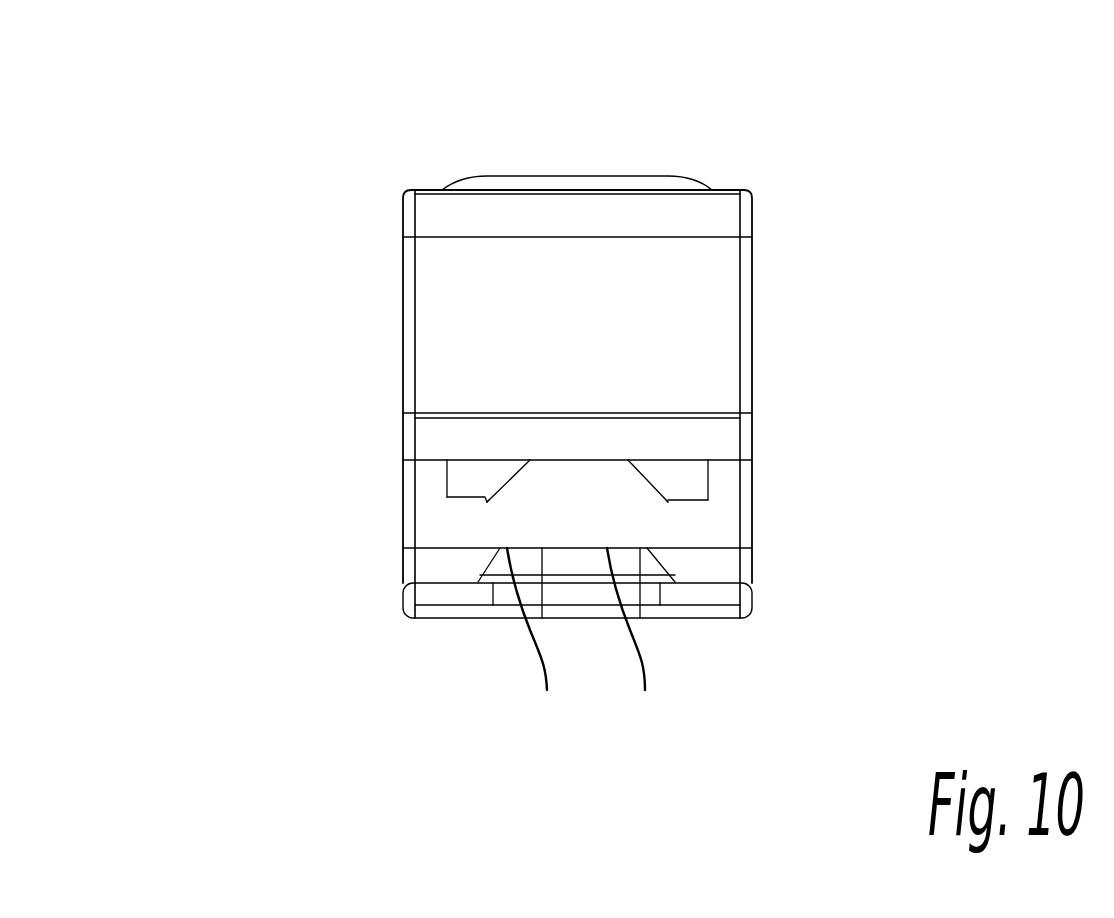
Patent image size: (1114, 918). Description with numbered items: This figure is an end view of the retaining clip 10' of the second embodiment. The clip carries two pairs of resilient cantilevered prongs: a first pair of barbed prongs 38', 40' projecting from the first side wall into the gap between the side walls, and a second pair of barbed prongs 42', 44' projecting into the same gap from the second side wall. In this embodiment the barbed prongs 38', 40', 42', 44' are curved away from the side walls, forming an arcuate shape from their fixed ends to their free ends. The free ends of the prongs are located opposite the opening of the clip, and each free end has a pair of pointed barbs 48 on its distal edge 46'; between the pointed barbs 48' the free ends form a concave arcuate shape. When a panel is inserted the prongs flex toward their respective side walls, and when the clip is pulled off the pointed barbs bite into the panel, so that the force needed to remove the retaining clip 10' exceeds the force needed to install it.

The retaining clip 10' is at (577, 323).
The barbed prong 44' is at (374, 456).
The barbed prong 42' is at (768, 456).
The distal edge 46' is at (461, 506).
The pointed barb 48' is at (549, 536).
The barbed prong 40' is at (433, 599).
The barbed prong 38' is at (781, 592).
The pointed barbs 48 is at (584, 637).